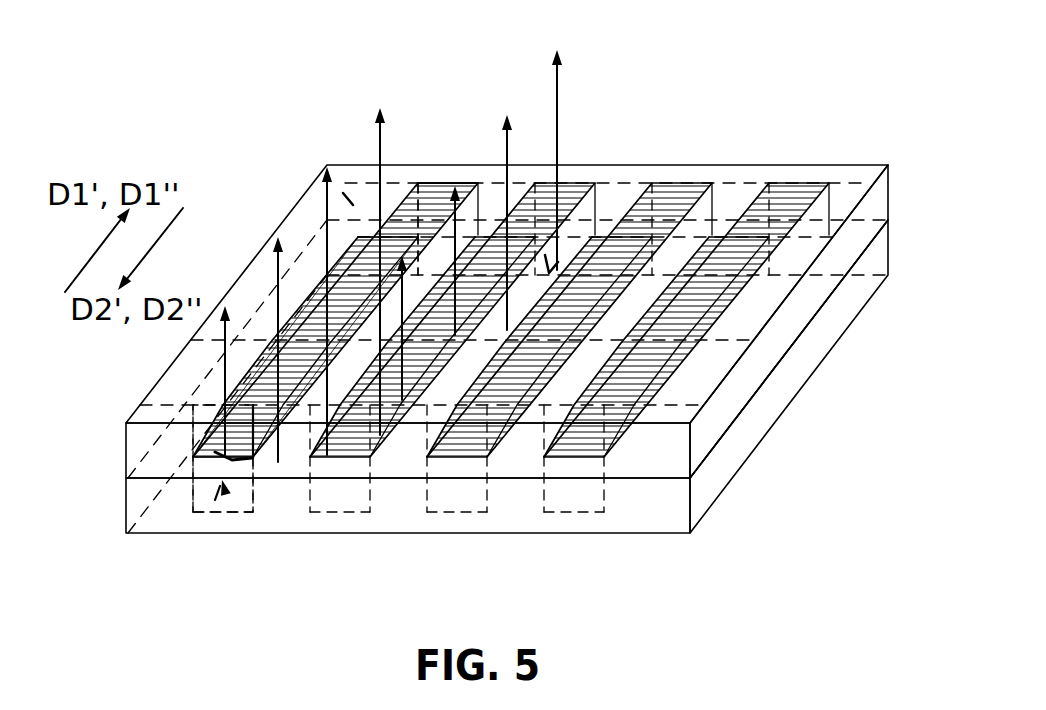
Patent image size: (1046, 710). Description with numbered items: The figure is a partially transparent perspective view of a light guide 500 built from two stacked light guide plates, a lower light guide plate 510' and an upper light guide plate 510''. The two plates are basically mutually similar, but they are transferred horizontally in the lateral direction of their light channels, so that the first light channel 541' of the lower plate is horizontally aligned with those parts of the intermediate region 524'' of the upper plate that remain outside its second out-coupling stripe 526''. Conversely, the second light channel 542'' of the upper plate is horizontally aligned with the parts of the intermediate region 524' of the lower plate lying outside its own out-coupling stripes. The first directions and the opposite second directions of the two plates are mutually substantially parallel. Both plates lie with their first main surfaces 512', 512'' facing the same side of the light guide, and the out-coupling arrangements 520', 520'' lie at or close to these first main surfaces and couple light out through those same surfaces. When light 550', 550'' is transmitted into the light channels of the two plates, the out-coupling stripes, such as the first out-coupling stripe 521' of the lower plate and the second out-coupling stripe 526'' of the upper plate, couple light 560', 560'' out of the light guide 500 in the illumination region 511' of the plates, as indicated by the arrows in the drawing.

The light guide 500 is at (266, 101).
The lower light guide plate 510' is at (537, 376).
The upper light guide plate 510'' is at (542, 279).
The illumination region 511' is at (488, 308).
The first main surface 512' is at (789, 271).
The first main surface 512'' is at (607, 146).
The out-coupling arrangement 520' is at (515, 295).
The out-coupling arrangement 520'' is at (715, 280).
The first out-coupling stripe 521' is at (165, 349).
The intermediate region 524' is at (270, 501).
The intermediate region 524'' is at (326, 196).
The second out-coupling stripe 526'' is at (429, 186).
The first light channel 541' is at (201, 524).
The second light channel 542'' is at (473, 198).
The light 550' is at (305, 441).
The light 550'' is at (632, 376).
The light 560' is at (150, 380).
The light 560'' is at (595, 161).